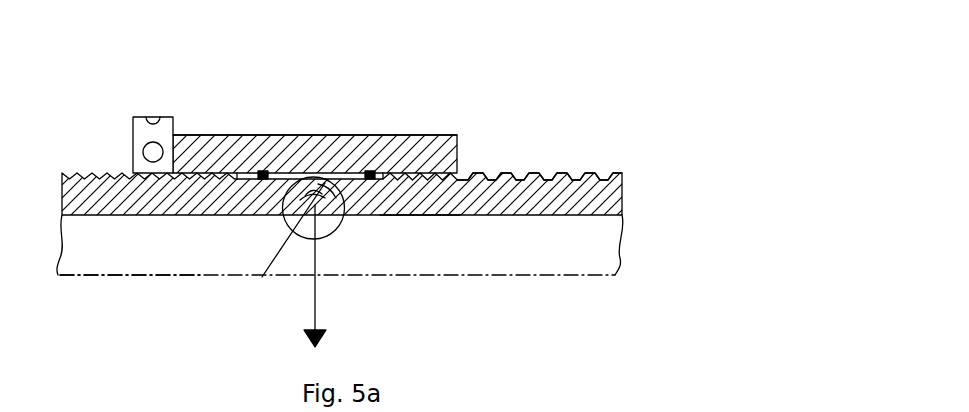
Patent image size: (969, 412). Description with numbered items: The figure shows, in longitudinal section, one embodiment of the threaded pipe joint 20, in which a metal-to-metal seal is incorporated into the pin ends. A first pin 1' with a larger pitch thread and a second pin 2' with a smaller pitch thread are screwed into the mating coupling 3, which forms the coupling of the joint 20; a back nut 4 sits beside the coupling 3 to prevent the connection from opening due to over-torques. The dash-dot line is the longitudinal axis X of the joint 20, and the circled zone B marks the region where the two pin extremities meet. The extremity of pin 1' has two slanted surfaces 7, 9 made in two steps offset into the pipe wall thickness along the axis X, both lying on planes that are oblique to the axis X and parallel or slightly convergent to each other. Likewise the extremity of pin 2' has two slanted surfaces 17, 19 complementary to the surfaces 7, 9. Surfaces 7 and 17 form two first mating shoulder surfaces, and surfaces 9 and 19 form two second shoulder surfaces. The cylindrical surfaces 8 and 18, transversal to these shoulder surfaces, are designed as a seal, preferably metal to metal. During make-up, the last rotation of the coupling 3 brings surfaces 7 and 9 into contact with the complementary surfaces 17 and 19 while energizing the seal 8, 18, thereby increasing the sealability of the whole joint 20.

The pin 1' is at (335, 180).
The pin 2' is at (554, 129).
The coupling 3 is at (210, 138).
The back nut 4 is at (150, 135).
The slanted surface 7 is at (312, 185).
The slanted surface 17 is at (320, 180).
The seal surface 8 is at (420, 215).
The slanted surface 9 is at (312, 195).
The seal surface 18 is at (308, 193).
The slanted surface 19 is at (330, 200).
The joint 20 is at (493, 127).
The detail zone B is at (313, 178).
The longitudinal axis X is at (615, 275).